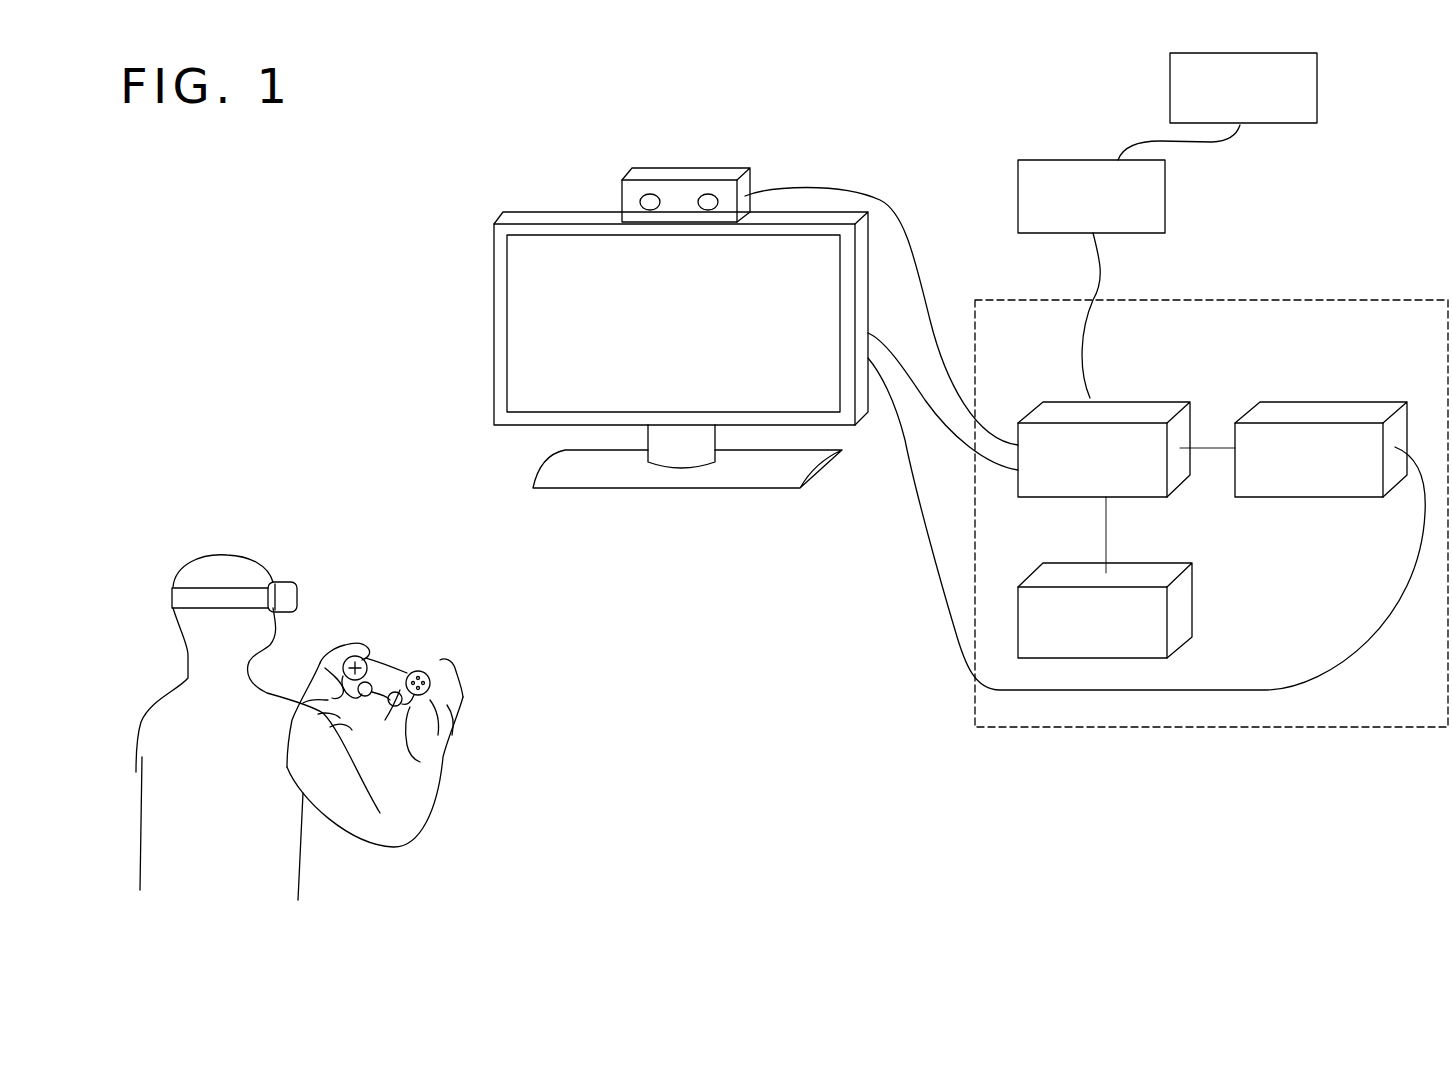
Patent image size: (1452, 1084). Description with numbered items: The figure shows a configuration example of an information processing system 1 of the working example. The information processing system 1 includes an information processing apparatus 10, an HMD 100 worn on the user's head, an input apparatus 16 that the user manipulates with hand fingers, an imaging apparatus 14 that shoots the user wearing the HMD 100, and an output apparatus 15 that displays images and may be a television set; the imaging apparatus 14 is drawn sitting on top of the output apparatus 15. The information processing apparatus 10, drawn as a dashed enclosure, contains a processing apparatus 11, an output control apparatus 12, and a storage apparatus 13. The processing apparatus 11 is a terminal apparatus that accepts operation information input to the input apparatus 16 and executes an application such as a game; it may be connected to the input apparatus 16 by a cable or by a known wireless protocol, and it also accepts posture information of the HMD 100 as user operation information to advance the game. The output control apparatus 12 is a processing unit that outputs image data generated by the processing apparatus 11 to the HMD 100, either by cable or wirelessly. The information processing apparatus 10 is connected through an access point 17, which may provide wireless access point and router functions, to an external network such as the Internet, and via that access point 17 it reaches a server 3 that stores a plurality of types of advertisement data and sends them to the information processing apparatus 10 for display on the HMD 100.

The information processing system 1 is at (778, 951).
The server 3 is at (1320, 97).
The information processing apparatus 10 is at (1353, 300).
The processing apparatus 11 is at (1140, 408).
The output control apparatus 12 is at (1350, 404).
The storage apparatus 13 is at (1138, 570).
The imaging apparatus 14 is at (695, 168).
The output apparatus 15 is at (493, 333).
The input apparatus 16 is at (397, 667).
The access point 17 is at (1018, 187).
The HMD 100 is at (172, 595).